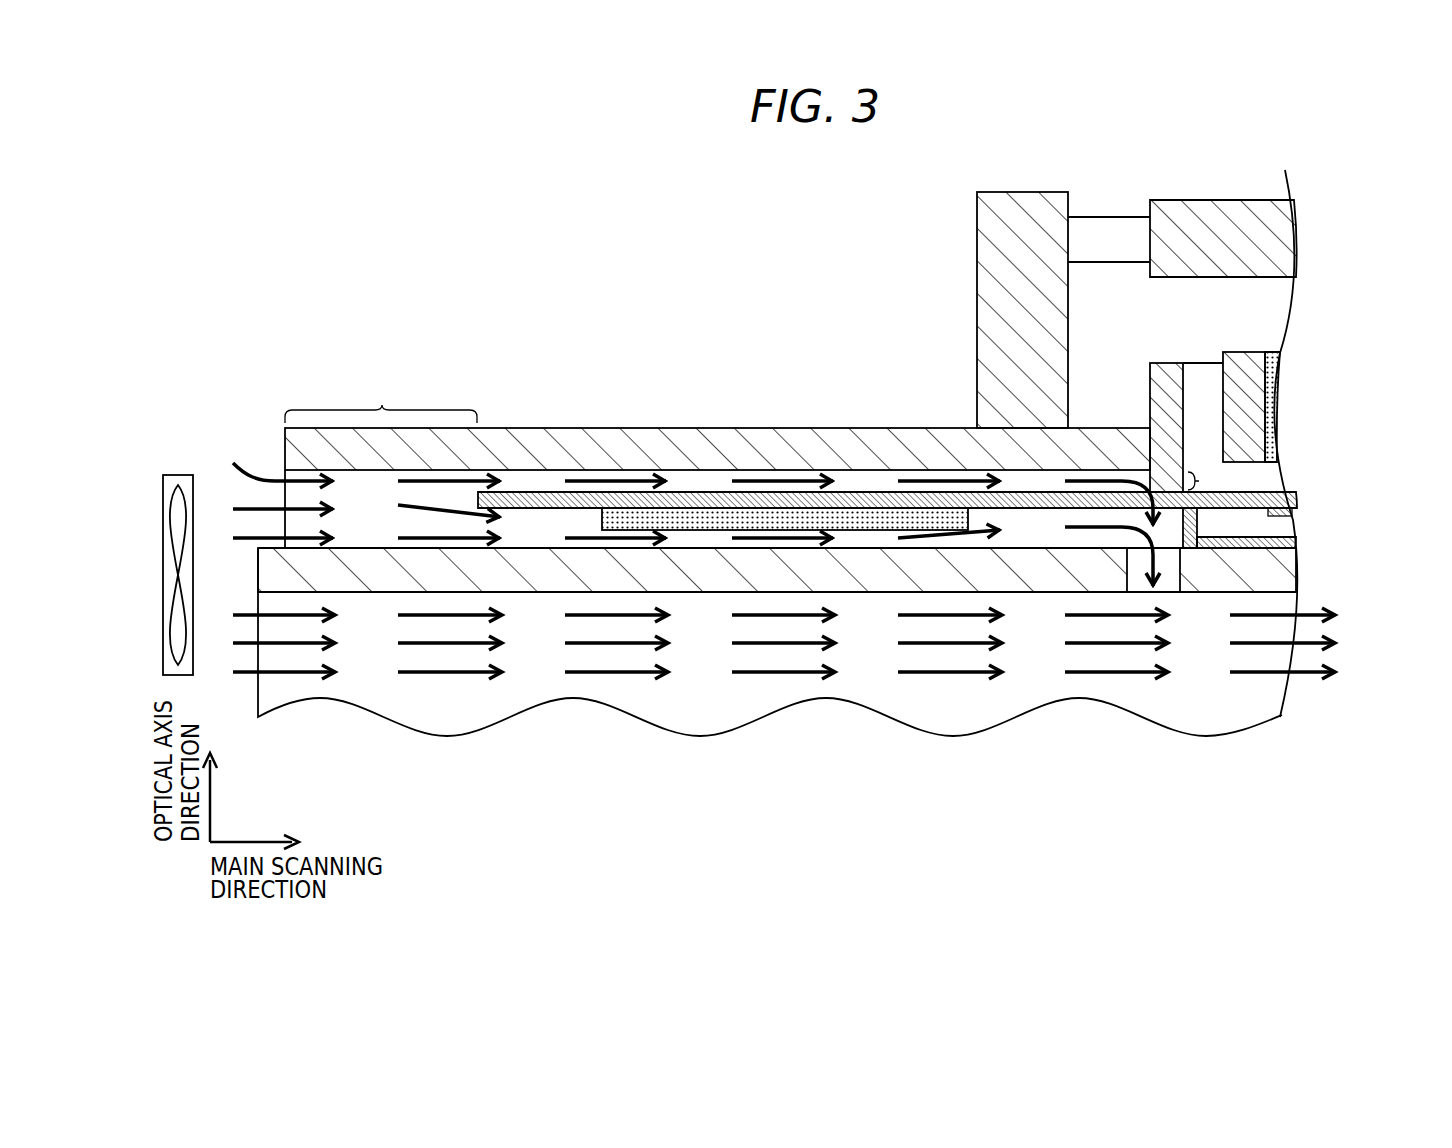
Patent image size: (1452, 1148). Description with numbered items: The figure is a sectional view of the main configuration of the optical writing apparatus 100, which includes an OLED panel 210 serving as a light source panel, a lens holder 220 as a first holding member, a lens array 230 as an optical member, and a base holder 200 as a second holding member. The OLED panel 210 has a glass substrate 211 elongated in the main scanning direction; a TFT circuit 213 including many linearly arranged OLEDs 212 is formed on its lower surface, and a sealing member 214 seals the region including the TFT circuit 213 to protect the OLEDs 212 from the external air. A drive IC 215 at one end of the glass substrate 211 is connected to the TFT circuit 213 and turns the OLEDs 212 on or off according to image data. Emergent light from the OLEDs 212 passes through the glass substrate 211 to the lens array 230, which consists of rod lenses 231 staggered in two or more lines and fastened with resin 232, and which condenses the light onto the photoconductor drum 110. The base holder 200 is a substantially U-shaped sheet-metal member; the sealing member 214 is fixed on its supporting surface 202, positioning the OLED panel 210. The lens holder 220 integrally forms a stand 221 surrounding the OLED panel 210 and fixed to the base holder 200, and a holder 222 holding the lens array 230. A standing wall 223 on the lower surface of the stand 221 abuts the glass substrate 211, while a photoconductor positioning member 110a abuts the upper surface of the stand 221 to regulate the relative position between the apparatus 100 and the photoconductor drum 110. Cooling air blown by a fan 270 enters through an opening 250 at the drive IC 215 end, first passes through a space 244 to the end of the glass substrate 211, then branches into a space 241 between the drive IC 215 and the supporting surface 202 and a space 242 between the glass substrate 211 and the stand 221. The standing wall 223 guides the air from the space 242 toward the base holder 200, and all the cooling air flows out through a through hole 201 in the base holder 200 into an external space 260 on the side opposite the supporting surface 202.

The optical writing apparatus 100 is at (680, 305).
The photoconductor drum 110 is at (1213, 190).
The photoconductor positioning member 110a is at (992, 190).
The base holder 200 is at (812, 609).
The through hole 201 is at (1172, 600).
The supporting surface 202 is at (378, 545).
The OLED panel 210 is at (957, 500).
The glass substrate 211 is at (1285, 491).
The OLEDs 212 is at (1288, 500).
The TFT circuit 213 is at (1292, 513).
The sealing member 214 is at (1294, 543).
The drive IC 215 is at (602, 517).
The lens holder 220 is at (764, 405).
The stand 221 is at (610, 427).
The holder 222 is at (1168, 363).
The standing wall 223 is at (1216, 480).
The lens array 230 is at (1330, 379).
The rod lenses 231 is at (1316, 407).
The resin 232 is at (1245, 360).
The space 241 is at (697, 535).
The space 242 is at (698, 483).
The space 244 is at (381, 397).
The opening 250 is at (277, 471).
The external space 260 is at (1373, 595).
The fan 270 is at (178, 470).